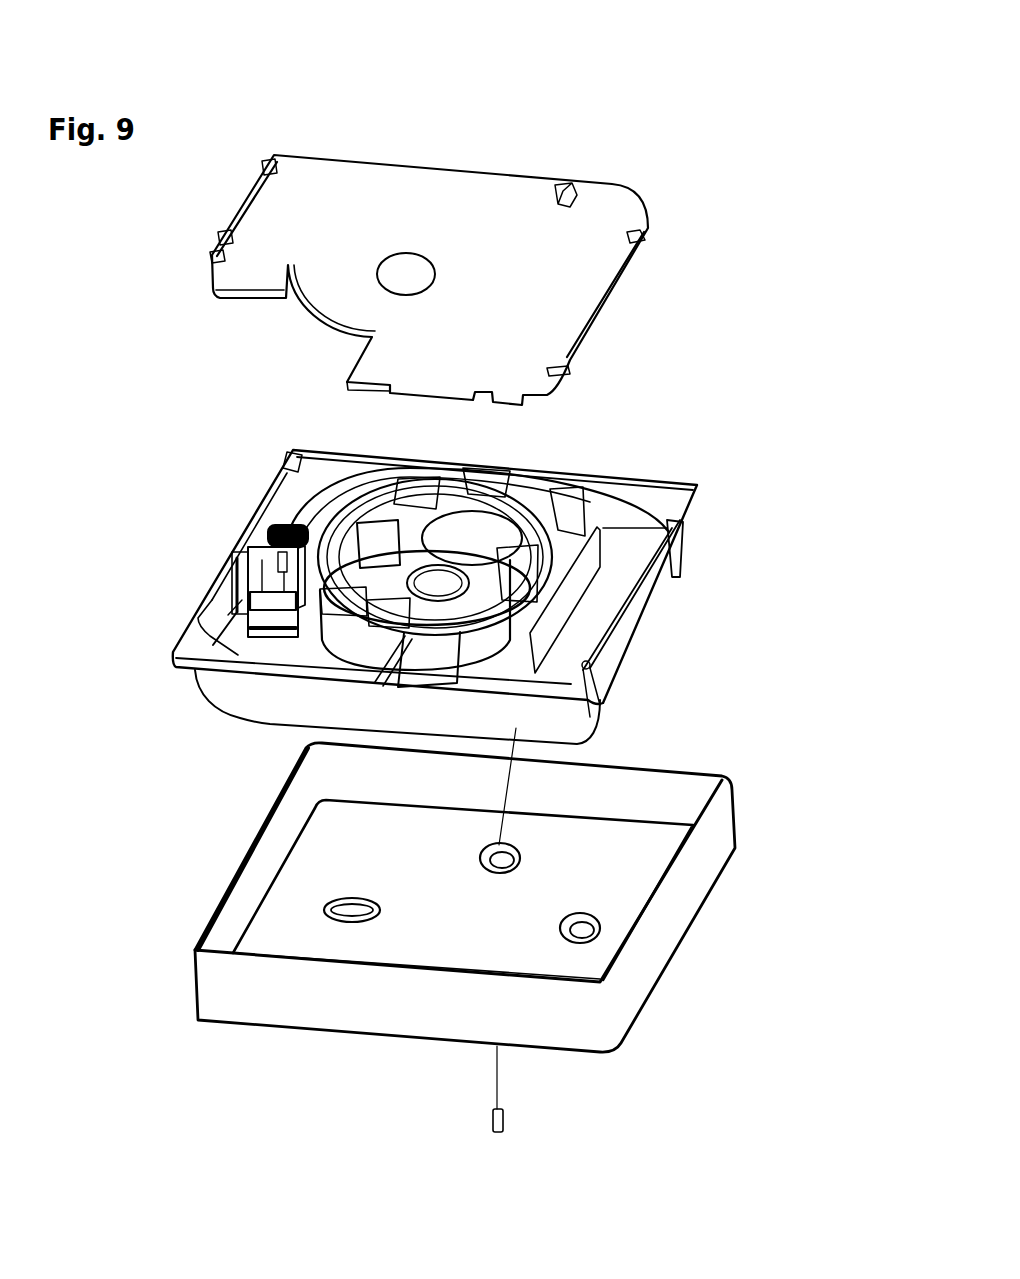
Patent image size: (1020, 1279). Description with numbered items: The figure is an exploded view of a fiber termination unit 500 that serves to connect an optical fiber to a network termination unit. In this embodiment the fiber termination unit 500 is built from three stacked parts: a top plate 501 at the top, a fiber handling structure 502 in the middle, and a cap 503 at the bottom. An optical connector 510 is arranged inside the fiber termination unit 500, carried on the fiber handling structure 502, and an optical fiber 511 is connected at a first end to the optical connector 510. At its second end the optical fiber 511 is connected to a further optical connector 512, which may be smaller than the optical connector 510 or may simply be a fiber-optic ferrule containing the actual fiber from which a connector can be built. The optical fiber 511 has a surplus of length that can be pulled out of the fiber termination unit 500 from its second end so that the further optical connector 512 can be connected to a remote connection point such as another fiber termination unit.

The fiber termination unit 500 is at (392, 112).
The top plate 501 is at (668, 249).
The fiber handling structure 502 is at (200, 538).
The cap 503 is at (200, 878).
The optical connector 510 is at (263, 567).
The optical fiber 511 is at (360, 482).
The further optical connector 512 is at (503, 1122).